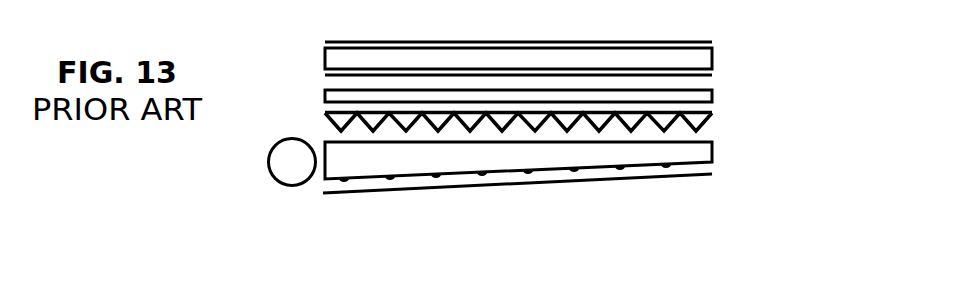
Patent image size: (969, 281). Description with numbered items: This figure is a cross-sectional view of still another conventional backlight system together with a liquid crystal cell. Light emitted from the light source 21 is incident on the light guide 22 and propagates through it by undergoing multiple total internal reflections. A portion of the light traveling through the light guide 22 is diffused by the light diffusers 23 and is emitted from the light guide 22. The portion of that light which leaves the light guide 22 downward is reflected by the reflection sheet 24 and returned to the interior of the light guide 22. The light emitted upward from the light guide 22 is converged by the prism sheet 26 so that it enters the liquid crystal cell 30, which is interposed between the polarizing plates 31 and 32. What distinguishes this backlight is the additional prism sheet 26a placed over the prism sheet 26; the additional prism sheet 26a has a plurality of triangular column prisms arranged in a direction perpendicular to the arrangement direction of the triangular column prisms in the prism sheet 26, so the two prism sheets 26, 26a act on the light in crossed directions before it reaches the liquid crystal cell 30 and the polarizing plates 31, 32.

The light source 21 is at (281, 170).
The light guide 22 is at (715, 156).
The light diffusers 23 is at (398, 179).
The reflection sheet 24 is at (481, 187).
The prism sheet 26 is at (715, 117).
The additional prism sheet 26a is at (715, 95).
The liquid crystal cell 30 is at (716, 64).
The polarizing plate 31 is at (716, 78).
The polarizing plate 32 is at (716, 45).